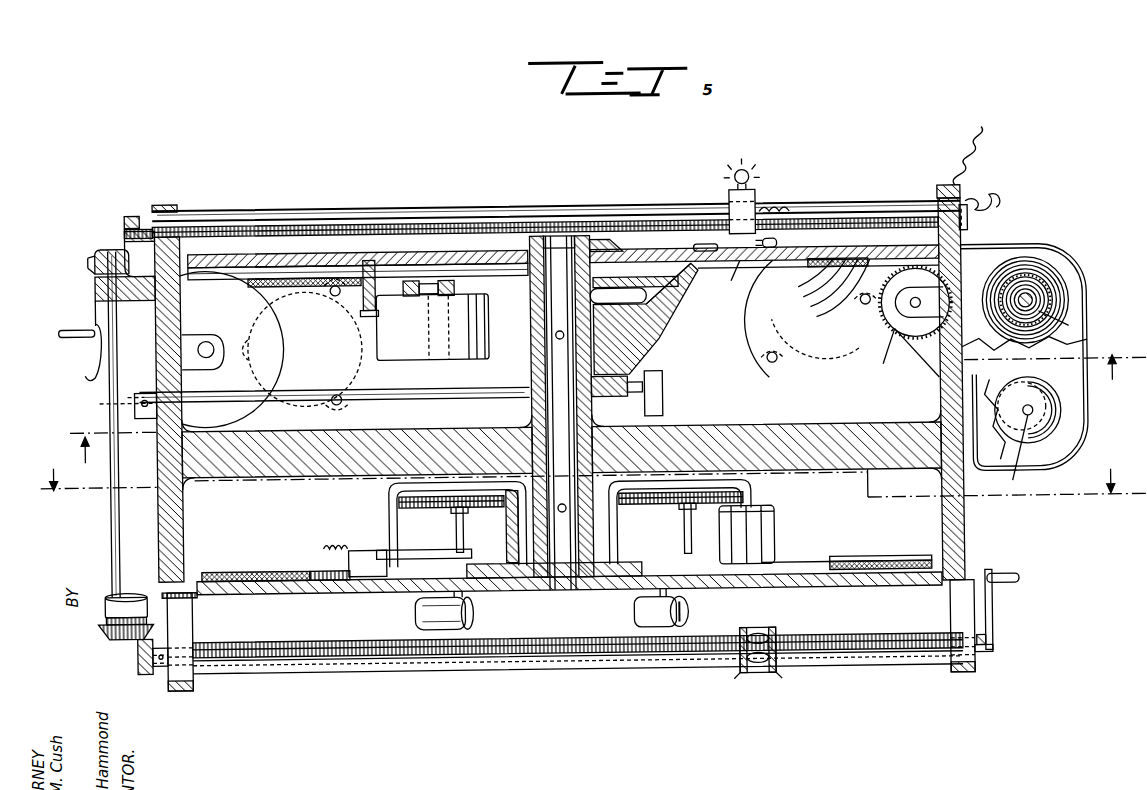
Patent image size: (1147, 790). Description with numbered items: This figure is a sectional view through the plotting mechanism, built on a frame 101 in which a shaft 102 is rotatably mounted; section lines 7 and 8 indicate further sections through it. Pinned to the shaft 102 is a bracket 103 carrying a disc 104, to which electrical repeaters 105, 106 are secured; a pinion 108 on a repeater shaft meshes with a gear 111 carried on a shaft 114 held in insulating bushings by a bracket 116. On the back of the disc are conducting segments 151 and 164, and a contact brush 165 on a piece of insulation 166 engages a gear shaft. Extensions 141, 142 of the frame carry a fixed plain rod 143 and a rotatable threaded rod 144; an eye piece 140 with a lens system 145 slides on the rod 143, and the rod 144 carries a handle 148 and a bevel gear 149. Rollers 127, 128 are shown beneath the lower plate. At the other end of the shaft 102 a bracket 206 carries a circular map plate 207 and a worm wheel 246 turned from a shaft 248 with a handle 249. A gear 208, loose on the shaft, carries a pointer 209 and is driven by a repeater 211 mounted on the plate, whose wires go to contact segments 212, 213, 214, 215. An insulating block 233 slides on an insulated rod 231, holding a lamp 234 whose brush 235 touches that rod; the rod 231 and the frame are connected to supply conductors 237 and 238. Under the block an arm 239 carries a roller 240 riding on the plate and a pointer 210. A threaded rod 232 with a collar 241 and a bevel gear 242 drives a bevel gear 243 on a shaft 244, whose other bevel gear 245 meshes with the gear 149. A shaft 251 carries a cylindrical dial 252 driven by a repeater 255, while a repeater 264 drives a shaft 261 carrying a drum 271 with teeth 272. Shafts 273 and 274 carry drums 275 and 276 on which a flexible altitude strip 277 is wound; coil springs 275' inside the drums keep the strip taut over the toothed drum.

The section line 7- 7 is at (590, 481).
The section line 8- 8 is at (606, 408).
The frame 101 is at (300, 473).
The shaft 102 is at (556, 427).
The bracket 103 is at (535, 580).
The disc 104 is at (298, 590).
The electrical repeater 105 is at (773, 528).
The electrical repeater 106 is at (440, 530).
The pinion 108 is at (745, 495).
The gear 111 is at (632, 504).
The shaft 114 is at (683, 530).
The bracket 116 is at (420, 550).
The roller 127 is at (635, 612).
The roller 128 is at (413, 612).
The eye piece 140 is at (737, 672).
The extension 141 is at (190, 625).
The extension 142 is at (948, 607).
The plain rod 143 is at (312, 670).
The threaded rod 144 is at (318, 640).
The lens system 145 is at (758, 632).
The handle 148 is at (985, 612).
The bevel gear 149 is at (148, 672).
The segment 151 is at (830, 563).
The contact segment 164 is at (928, 560).
The contact brush 165 is at (345, 545).
The piece of insulation 166 is at (350, 562).
The bracket 206 is at (642, 330).
The circular plate 207 is at (408, 250).
The gear 208 is at (655, 310).
The pointer 209 is at (605, 238).
The pointer 210 is at (705, 248).
The electrical repeater 211 is at (410, 352).
The contact segment 212 is at (812, 274).
The contact segment 213 is at (825, 274).
The contact segment 214 is at (840, 274).
The contact segment 215 is at (856, 274).
The rod 231 is at (323, 206).
The threaded rod 232 is at (246, 221).
The block of insulating material 233 is at (730, 196).
The lamp 234 is at (752, 176).
The brush 235 is at (778, 205).
The conductor 237 is at (1004, 198).
The conductor 238 is at (983, 150).
The arm 239 is at (740, 264).
The roller 240 is at (782, 246).
The collar 241 is at (972, 228).
The bevel gear 242 is at (135, 210).
The bevel gear 243 is at (95, 250).
The shaft 244 is at (110, 402).
The bevel gear 245 is at (140, 596).
The worm wheel 246 is at (632, 378).
The shaft 248 is at (436, 331).
The handle 249 is at (95, 345).
The shaft 251 is at (207, 337).
The cylindrical dial 252 is at (283, 335).
The electrical repeater 255 is at (362, 397).
The shaft 261 is at (843, 356).
The electrical repeater 264 is at (750, 320).
The drum 271 is at (905, 335).
The teeth 272 is at (930, 380).
The shaft 273 is at (1030, 300).
The shaft 274 is at (1024, 455).
The drum 275 is at (1030, 356).
The coil spring 275' is at (1079, 318).
The drum 276 is at (1061, 445).
The strip of flexible material 277 is at (879, 355).